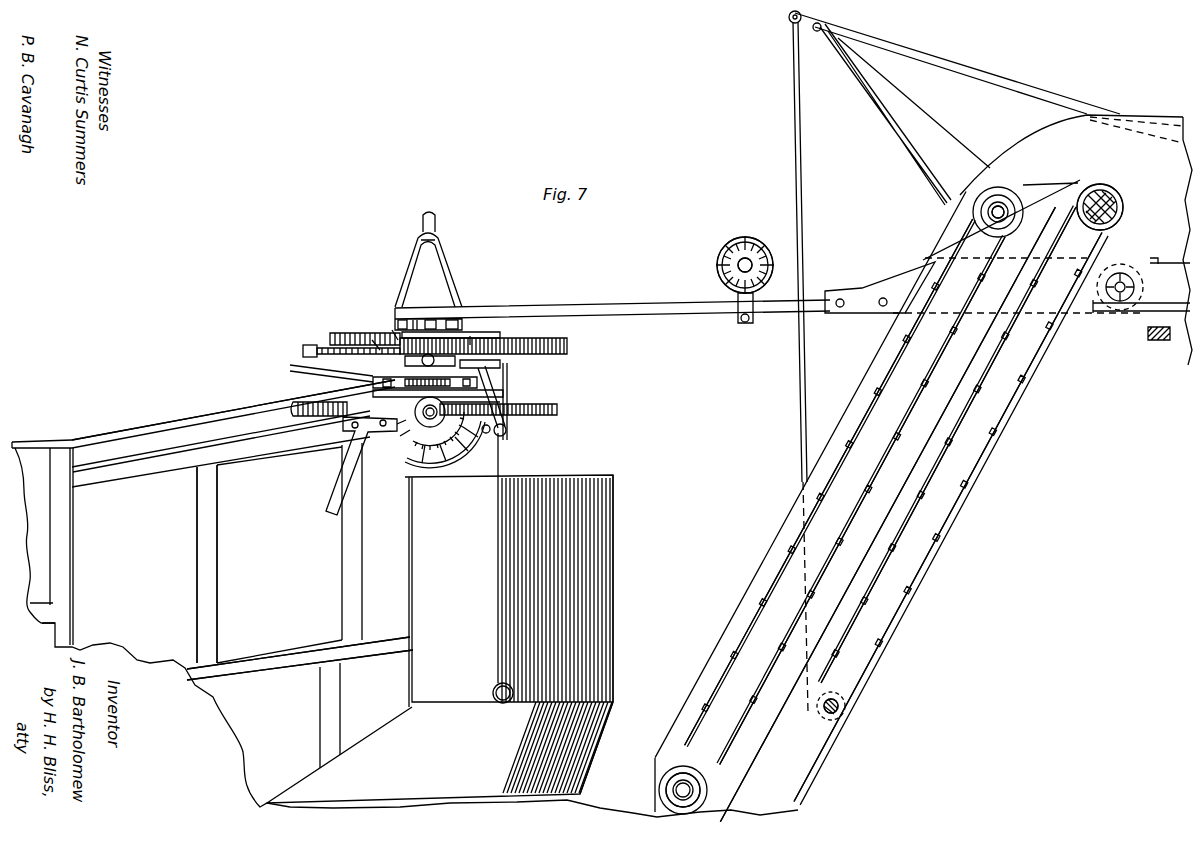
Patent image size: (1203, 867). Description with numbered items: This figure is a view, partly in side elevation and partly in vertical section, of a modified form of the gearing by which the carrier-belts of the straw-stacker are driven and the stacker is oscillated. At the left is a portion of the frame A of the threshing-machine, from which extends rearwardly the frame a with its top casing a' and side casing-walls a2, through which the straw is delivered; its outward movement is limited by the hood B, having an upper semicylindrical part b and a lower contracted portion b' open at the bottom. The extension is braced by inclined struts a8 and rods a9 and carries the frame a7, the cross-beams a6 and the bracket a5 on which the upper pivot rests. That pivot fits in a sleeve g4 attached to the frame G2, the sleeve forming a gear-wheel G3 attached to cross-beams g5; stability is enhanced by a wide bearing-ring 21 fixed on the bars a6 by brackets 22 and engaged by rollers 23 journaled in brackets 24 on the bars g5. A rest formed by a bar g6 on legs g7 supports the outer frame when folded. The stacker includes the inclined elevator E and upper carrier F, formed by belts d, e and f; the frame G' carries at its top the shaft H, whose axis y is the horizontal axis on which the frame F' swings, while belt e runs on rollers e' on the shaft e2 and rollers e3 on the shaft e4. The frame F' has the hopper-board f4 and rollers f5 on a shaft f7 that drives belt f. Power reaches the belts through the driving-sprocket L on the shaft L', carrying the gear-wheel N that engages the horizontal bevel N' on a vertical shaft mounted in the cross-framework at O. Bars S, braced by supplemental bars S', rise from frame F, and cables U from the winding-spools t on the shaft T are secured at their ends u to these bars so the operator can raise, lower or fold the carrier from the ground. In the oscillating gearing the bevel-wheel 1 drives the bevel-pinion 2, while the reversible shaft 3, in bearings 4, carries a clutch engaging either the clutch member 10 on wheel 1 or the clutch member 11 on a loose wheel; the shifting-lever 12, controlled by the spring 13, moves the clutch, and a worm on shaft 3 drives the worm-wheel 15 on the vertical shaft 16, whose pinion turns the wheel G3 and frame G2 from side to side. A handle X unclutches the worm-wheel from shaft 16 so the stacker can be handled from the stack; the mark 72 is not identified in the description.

The frame of the threshing-machine A is at (65, 645).
The frame a is at (300, 564).
The top casing a' is at (221, 449).
The side casing-walls a2 is at (279, 555).
The bracket a5 is at (470, 334).
The cross-beams a6 is at (372, 380).
The frame a7 is at (438, 394).
The inclined struts a8 is at (352, 472).
The rods a9 is at (218, 412).
The hood or receptacle B is at (440, 639).
The upper semicylindrical part b is at (620, 588).
The lower contracted portion b' is at (599, 748).
The handle X is at (493, 568).
The bar g6 is at (430, 216).
The legs or brackets g7 is at (413, 260).
The frame G2 is at (658, 312).
The gear-wheel G3 is at (392, 335).
The sleeve g4 is at (440, 322).
The cross-beams g5 is at (397, 324).
The rollers 23 is at (415, 320).
The clutch member 11 is at (478, 338).
The bearing-ring 21 is at (567, 348).
The shifting-lever 12 is at (302, 350).
The brackets 22 is at (374, 342).
The horizontal bevel-pinion 2 is at (330, 338).
The brackets 24 is at (430, 362).
The clutch member 10 is at (500, 366).
The vertical shaft 16 is at (500, 394).
The worm-wheel 15 is at (556, 412).
The spring 13 is at (325, 416).
The crank link 72 is at (492, 401).
The bearing 4 is at (398, 418).
The reversible shaft 3 is at (398, 430).
The bevel-wheel 1 is at (458, 455).
The gear-wheel N is at (732, 265).
The driving-sprocket L is at (737, 240).
The shaft L' is at (749, 259).
The horizontal bevel N' is at (720, 318).
The cross-framework O is at (732, 327).
The ropes or cables U is at (797, 160).
The ends of the cables u is at (794, 24).
The bars S is at (957, 63).
The supplemental bars S' is at (905, 114).
The wide fender or hopper-board f4 is at (1076, 240).
The rollers e3 is at (1005, 206).
The shaft e4 is at (992, 212).
The horizontal axis y is at (1102, 192).
The shaft H is at (1124, 205).
The rollers f5 is at (1144, 287).
The upper carrier F is at (1170, 253).
The frame F' is at (1141, 327).
The shaft f7 is at (1096, 315).
The belt f is at (1168, 340).
The inclined elevator E is at (879, 503).
The belt e is at (846, 492).
The belt d is at (992, 441).
The frame of the elevating portion G' is at (887, 514).
The shaft e2 is at (676, 790).
The rollers e' is at (688, 772).
The shaft T is at (839, 713).
The winding-spools t is at (836, 702).